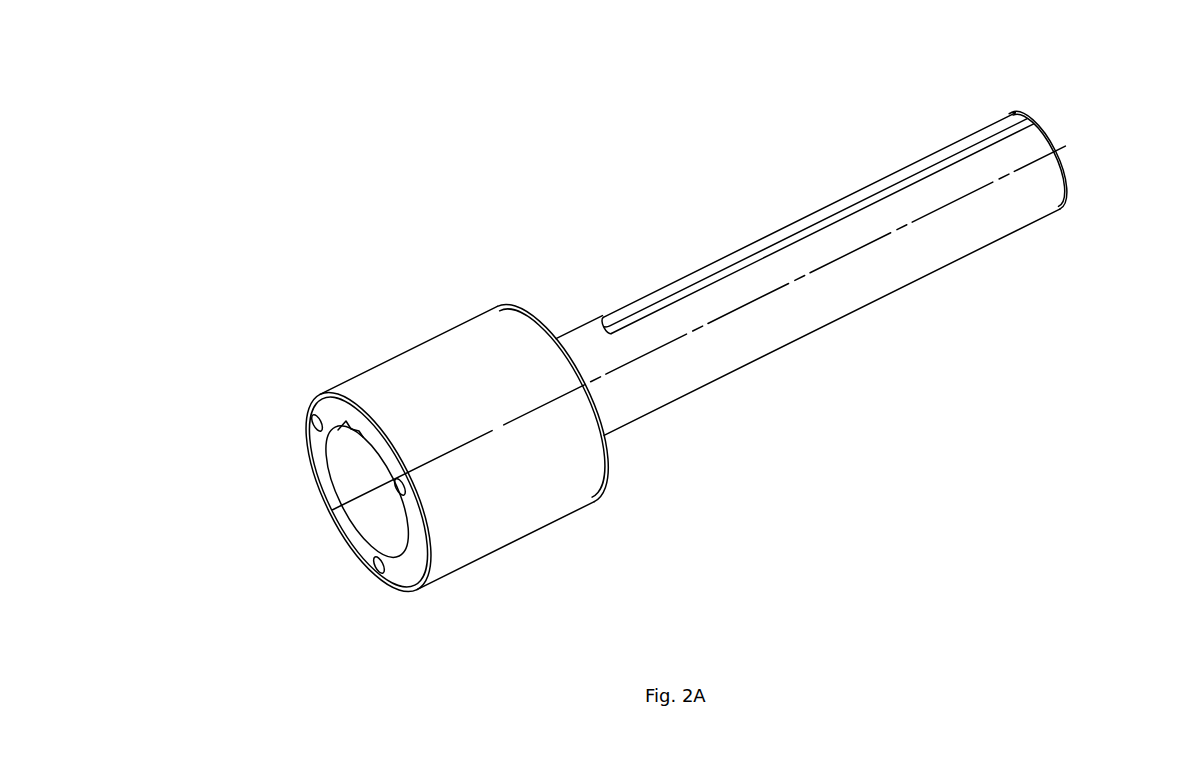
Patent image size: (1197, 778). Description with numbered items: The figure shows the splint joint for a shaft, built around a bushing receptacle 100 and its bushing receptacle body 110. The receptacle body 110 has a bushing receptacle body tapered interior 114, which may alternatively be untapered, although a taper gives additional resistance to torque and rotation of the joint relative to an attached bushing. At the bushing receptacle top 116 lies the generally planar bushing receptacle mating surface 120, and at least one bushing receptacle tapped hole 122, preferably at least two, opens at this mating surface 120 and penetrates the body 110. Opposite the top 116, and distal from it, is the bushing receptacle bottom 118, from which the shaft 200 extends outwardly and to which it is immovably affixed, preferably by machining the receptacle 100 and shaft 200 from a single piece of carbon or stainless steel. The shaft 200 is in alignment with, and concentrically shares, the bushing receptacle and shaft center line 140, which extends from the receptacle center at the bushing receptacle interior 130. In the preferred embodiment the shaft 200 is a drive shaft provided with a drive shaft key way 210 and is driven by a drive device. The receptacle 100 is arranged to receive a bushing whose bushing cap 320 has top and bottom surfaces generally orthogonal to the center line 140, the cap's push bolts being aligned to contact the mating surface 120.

The bushing receptacle 100 is at (407, 269).
The bushing receptacle body 110 is at (491, 353).
The bushing receptacle body tapered interior 114 is at (345, 477).
The bushing receptacle top 116 is at (350, 385).
The bushing receptacle bottom 118 is at (540, 328).
The bushing receptacle mating surface 120 is at (370, 437).
The bushing receptacle tapped hole 122 is at (315, 417).
The bushing receptacle interior 130 is at (362, 460).
The bushing receptacle and shaft center line 140 is at (367, 492).
The shaft 200 is at (848, 133).
The drive shaft key way 210 is at (765, 252).
The bushing cap 320 is at (299, 440).